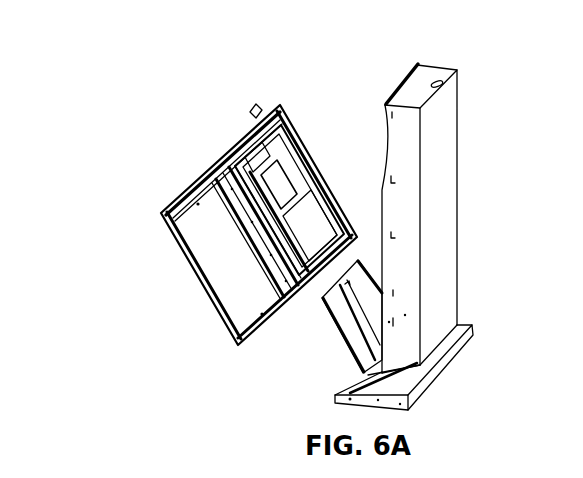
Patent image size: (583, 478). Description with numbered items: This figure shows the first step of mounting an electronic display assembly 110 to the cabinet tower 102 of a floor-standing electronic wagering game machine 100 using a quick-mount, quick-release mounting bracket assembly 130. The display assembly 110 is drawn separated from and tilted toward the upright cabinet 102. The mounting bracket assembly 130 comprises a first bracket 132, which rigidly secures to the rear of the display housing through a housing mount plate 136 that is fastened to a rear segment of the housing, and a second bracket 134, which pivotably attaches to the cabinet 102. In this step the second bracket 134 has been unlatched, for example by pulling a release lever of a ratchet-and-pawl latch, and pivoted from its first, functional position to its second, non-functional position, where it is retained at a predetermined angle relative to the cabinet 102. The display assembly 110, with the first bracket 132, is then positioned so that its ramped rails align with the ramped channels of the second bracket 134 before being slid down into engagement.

The electronic wagering game machine 100 is at (196, 62).
The cabinet tower 102 is at (450, 218).
The video display assembly 110 is at (156, 209).
The mounting bracket assembly 130 is at (286, 348).
The first bracket 132 is at (310, 220).
The second bracket 134 is at (352, 338).
The housing mount plate 136 is at (230, 155).